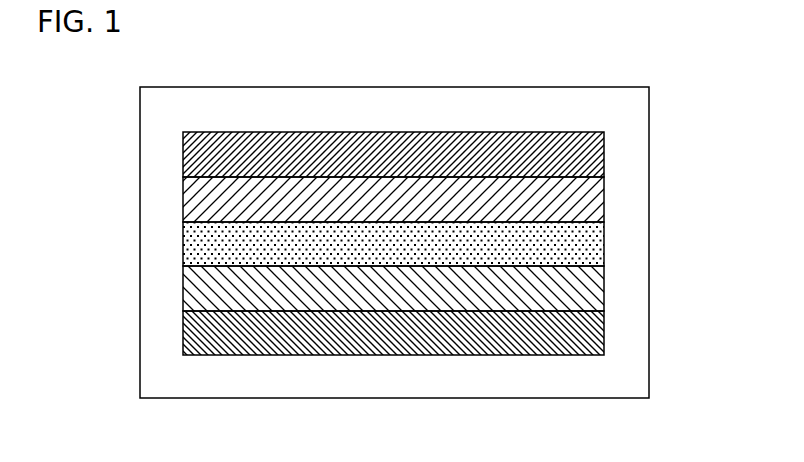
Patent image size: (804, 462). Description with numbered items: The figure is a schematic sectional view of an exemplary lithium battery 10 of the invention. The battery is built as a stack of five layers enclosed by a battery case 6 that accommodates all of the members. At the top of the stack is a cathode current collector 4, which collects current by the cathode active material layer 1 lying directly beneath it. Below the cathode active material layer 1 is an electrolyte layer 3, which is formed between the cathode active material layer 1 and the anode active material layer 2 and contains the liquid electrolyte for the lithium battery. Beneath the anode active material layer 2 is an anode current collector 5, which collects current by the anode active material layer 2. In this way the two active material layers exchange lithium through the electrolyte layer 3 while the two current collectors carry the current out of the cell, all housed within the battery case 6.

The lithium battery 10 is at (629, 57).
The battery case 6 is at (618, 117).
The cathode current collector 4 is at (575, 162).
The cathode active material layer 1 is at (575, 207).
The electrolyte layer 3 is at (575, 252).
The anode active material layer 2 is at (575, 297).
The anode current collector 5 is at (575, 340).